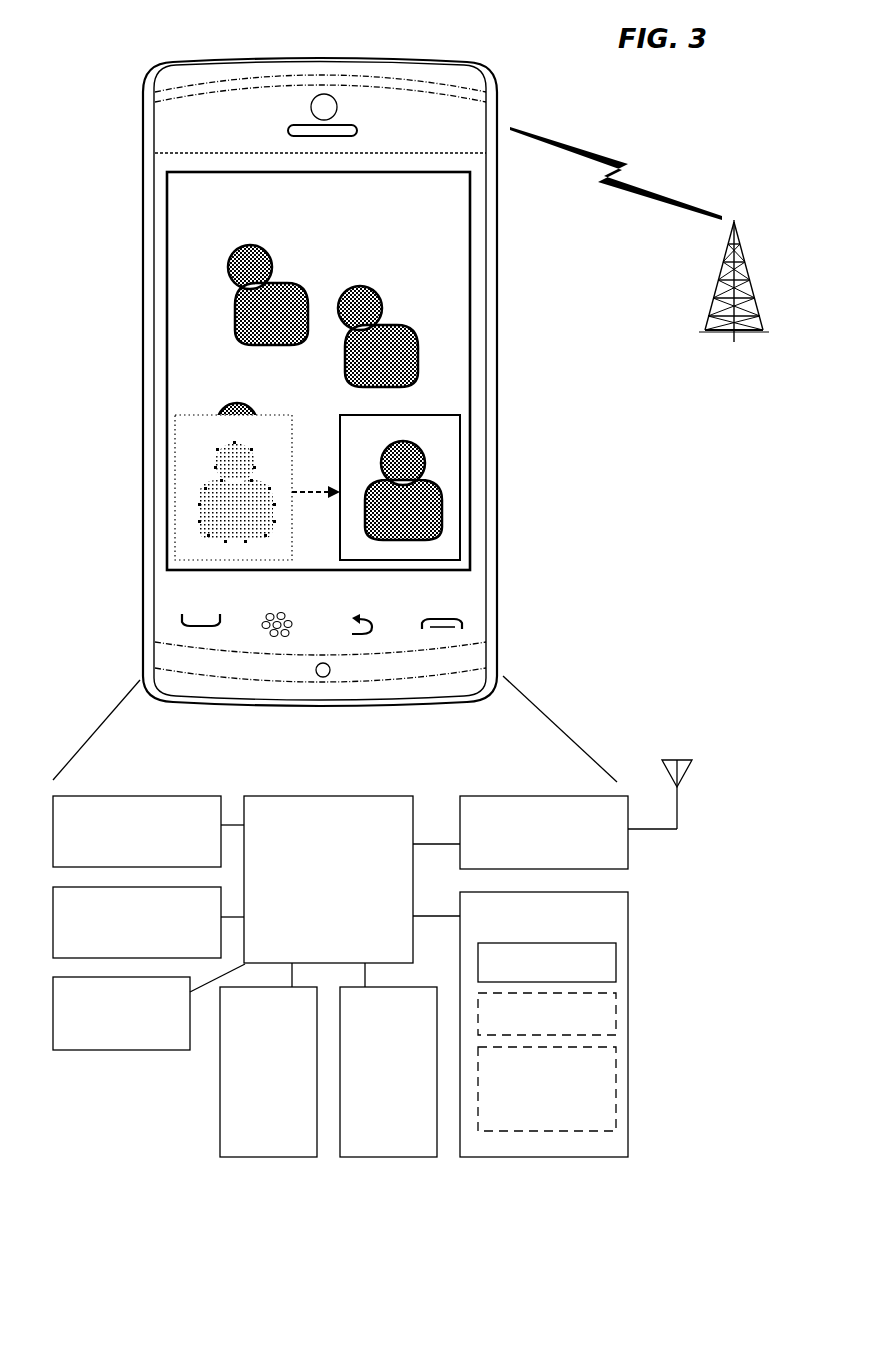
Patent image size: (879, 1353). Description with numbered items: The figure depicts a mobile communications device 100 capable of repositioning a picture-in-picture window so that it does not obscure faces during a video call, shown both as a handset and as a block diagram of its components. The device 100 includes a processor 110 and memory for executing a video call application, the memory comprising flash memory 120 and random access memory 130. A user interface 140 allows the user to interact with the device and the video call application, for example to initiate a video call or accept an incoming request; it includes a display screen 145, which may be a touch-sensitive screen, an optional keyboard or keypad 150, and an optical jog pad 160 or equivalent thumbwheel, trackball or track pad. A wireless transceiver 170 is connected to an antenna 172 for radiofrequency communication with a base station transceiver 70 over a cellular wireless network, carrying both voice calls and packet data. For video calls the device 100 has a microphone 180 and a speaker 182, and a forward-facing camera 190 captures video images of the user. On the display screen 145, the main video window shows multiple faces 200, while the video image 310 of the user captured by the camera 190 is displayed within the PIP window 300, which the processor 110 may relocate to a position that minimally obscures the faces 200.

The communications device 100 is at (135, 163).
The base station transceiver 70 is at (712, 313).
The processor 110 is at (328, 879).
The flash memory 120 is at (268, 1072).
The random access memory (RAM) 130 is at (388, 1072).
The user interface 140 is at (628, 917).
The display screen 145 is at (190, 328).
The keyboard or keypad 150 is at (616, 1010).
The optical jog pad 160 is at (608, 1101).
The wireless transceiver 170 is at (544, 832).
The antenna 172 is at (680, 808).
The microphone 180 is at (330, 676).
The speaker 182 is at (292, 127).
The forward-facing camera 190 is at (322, 106).
The face 200 is at (250, 258).
The PIP window 300 is at (314, 463).
The video image 310 is at (420, 446).